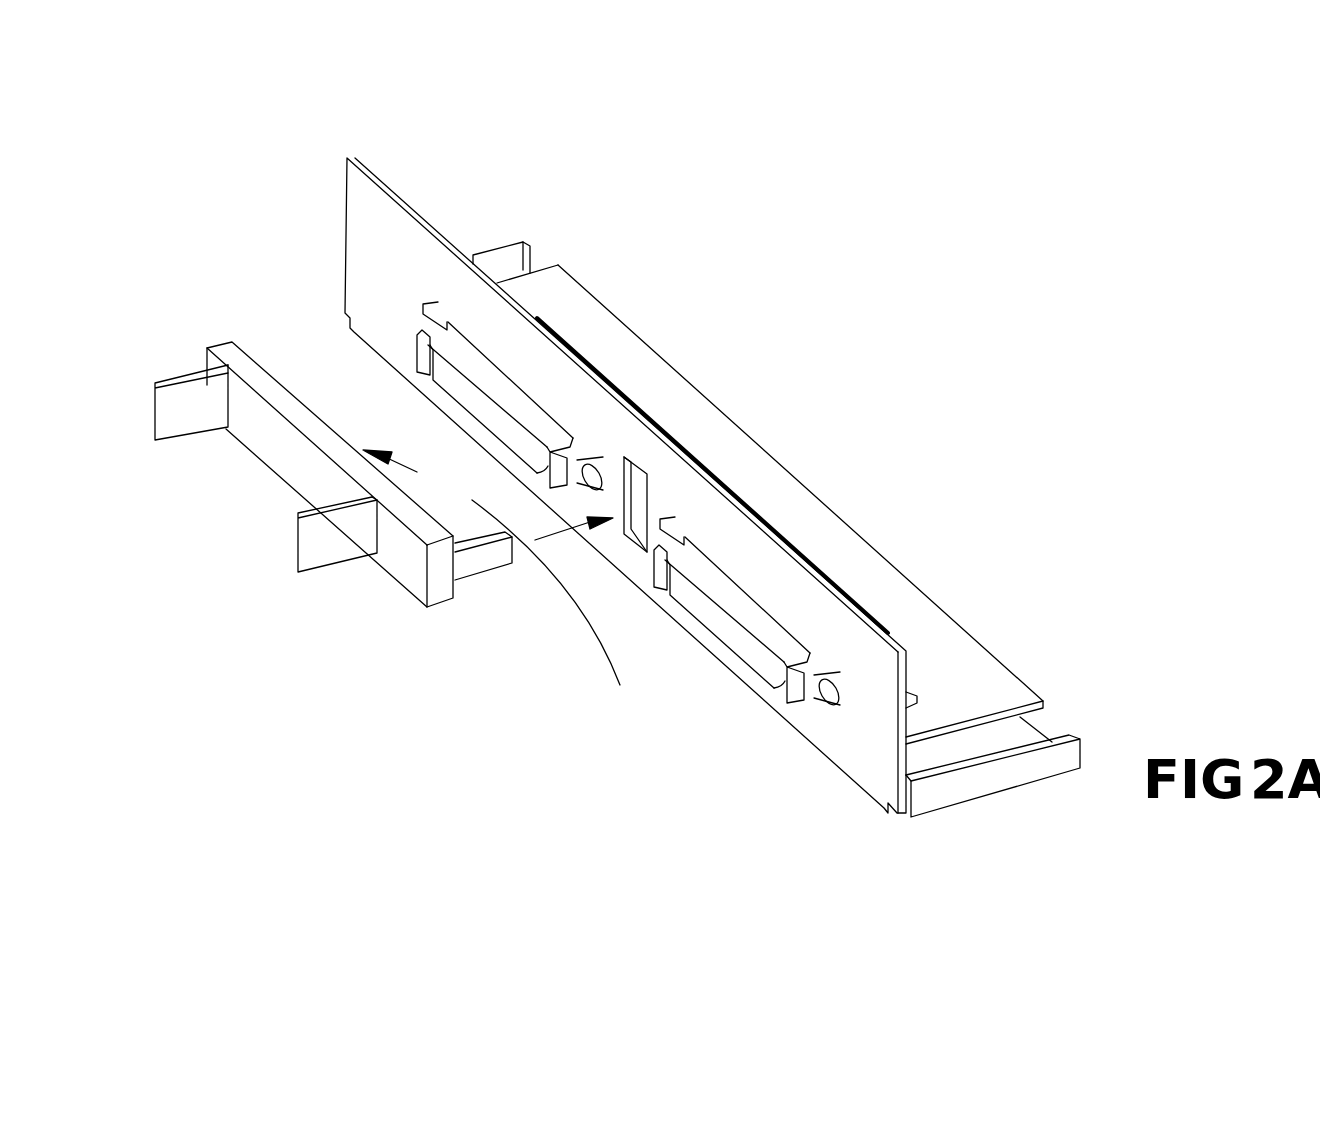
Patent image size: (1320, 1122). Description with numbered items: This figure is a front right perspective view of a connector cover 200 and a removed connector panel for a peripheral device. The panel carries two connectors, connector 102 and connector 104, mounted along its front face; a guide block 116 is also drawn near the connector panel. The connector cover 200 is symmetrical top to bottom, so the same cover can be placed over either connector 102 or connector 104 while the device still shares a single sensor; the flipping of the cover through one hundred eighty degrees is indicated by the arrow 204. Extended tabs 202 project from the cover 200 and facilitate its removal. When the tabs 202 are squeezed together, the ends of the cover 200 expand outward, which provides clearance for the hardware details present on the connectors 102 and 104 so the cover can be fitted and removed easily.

The connector 102 is at (710, 635).
The connector 104 is at (527, 395).
The guide block 116 is at (493, 568).
The connector cover 200 is at (253, 352).
The extended tabs 202 is at (192, 437).
The arrow 204 is at (600, 647).